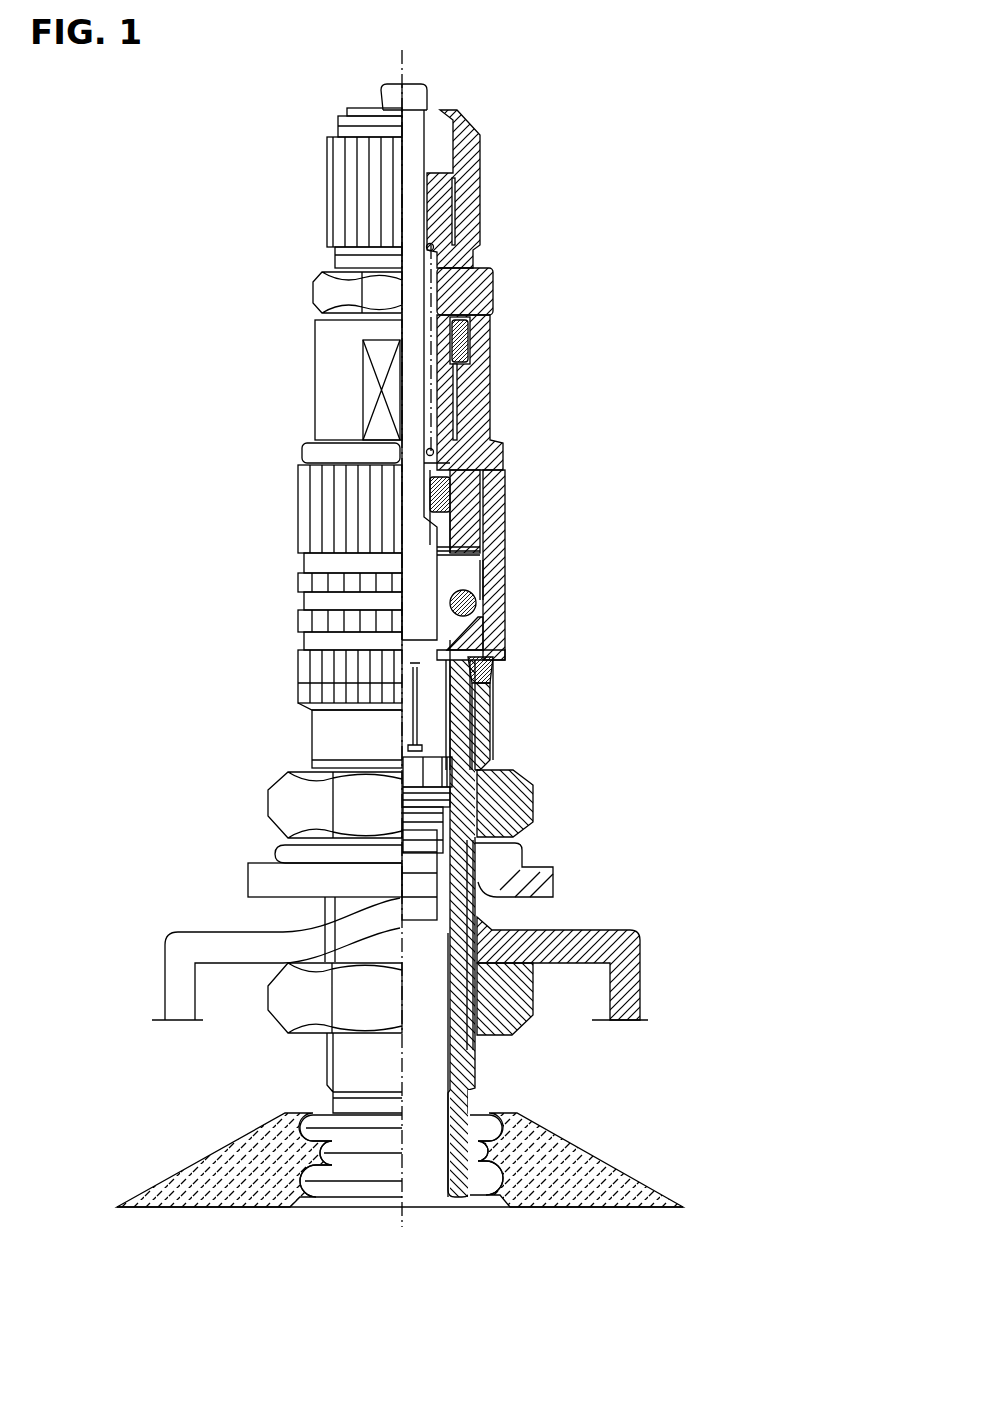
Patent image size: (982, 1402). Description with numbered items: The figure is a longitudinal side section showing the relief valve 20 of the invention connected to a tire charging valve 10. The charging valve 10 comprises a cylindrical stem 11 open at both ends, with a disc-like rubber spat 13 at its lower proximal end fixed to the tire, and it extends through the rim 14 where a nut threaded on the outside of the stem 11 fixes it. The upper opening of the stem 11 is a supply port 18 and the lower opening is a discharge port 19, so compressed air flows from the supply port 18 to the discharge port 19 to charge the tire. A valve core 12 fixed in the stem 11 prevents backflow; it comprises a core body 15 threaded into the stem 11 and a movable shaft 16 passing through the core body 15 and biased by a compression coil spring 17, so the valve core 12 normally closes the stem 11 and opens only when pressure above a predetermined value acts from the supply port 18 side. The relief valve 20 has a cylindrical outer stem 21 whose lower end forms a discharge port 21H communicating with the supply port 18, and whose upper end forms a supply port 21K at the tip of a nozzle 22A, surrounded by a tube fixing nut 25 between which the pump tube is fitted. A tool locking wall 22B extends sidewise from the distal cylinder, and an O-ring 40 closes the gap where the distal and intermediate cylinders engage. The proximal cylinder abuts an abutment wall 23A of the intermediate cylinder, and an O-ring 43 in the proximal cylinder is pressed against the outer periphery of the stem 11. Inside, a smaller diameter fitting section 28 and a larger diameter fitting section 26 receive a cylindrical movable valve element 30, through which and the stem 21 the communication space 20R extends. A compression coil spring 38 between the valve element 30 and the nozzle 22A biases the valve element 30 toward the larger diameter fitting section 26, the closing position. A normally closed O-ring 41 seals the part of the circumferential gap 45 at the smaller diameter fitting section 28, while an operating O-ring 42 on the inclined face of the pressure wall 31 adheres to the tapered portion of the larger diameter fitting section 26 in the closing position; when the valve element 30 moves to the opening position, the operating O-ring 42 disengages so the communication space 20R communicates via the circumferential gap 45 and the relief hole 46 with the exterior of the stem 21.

The charging valve 10 is at (537, 780).
The stem 11 is at (445, 880).
The valve core 12 is at (517, 780).
The spat 13 is at (577, 1170).
The rim 14 is at (639, 986).
The core body 15 is at (430, 833).
The movable shaft 16 is at (404, 744).
The compression coil spring 17 is at (428, 722).
The supply port 18 is at (450, 692).
The discharge port 19 is at (440, 1187).
The relief valve 20 is at (431, 385).
The communication space 20R is at (415, 291).
The stem 21 is at (487, 255).
The discharge port 21H is at (413, 746).
The supply port 21K is at (413, 83).
The nozzle 22A is at (430, 100).
The tool locking wall 22B is at (488, 287).
The abutment wall 23A is at (503, 441).
The tube fixing nut 25 is at (481, 182).
The larger diameter fitting section 26 is at (485, 598).
The smaller diameter fitting section 28 is at (466, 506).
The movable valve element 30 is at (407, 458).
The pressure wall 31 is at (427, 585).
The compression coil spring 38 is at (412, 450).
The O-ring 40 is at (465, 338).
The normally closed O-ring 41 is at (428, 488).
The operating O-ring 42 is at (492, 626).
The O-ring 43 is at (492, 667).
The circumferential gap 45 is at (465, 555).
The relief hole 46 is at (490, 566).